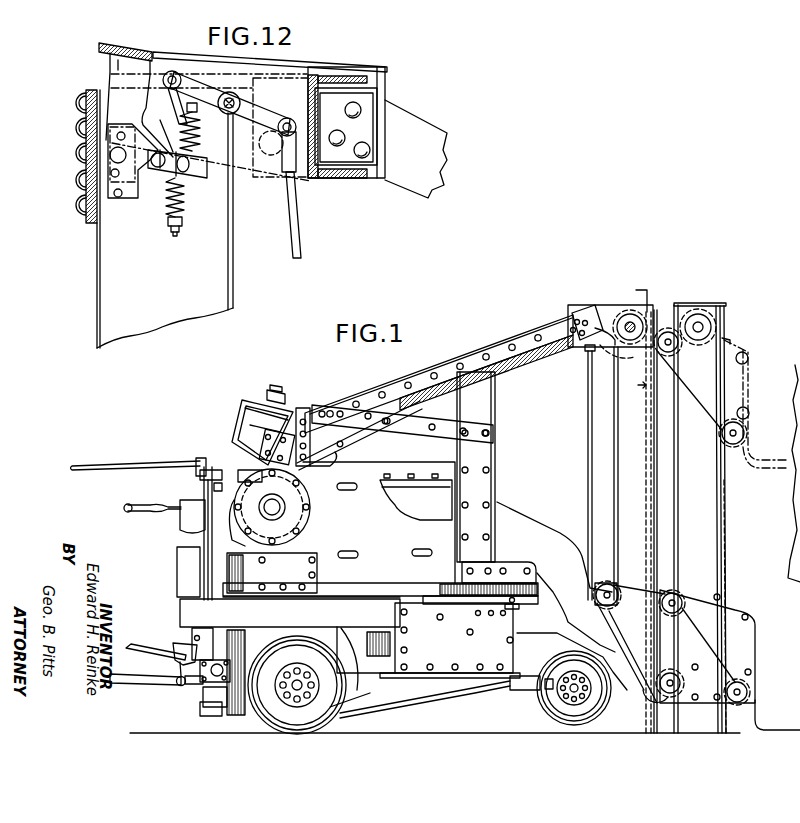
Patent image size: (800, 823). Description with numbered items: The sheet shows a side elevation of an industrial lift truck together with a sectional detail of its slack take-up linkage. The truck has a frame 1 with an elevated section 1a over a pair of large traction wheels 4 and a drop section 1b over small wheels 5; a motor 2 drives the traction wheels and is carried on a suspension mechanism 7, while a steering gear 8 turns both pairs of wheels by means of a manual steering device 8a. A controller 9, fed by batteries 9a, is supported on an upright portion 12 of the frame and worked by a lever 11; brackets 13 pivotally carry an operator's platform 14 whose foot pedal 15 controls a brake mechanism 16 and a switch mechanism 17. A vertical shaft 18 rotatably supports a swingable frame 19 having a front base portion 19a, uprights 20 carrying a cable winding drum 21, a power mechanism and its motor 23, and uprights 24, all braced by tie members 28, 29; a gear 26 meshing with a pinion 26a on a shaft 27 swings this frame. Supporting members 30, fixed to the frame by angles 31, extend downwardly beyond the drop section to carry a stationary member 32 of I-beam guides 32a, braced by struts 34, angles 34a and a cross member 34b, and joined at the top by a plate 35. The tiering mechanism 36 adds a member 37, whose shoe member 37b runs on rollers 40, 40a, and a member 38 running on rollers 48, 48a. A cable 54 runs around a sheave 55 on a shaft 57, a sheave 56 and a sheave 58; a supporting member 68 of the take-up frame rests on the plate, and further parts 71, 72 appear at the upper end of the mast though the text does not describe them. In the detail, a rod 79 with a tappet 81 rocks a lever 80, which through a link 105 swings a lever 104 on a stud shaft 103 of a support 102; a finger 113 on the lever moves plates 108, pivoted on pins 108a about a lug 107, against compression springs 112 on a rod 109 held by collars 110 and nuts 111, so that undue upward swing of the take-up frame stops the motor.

In FIG. 1, the frame 1 is at (290, 613).
In FIG. 1, the elevated section 1a is at (340, 610).
In FIG. 1, the drop section 1b is at (547, 630).
In FIG. 1, the motor 2 is at (245, 645).
In FIG. 1, the wheels 4 is at (262, 720).
In FIG. 1, the wheels 5 is at (540, 716).
In FIG. 1, the suspension mechanism 7 is at (208, 714).
In FIG. 1, the steering gear 8 is at (404, 698).
In FIG. 1, the manual steering device 8a is at (120, 465).
In FIG. 1, the controller 9 is at (185, 530).
In FIG. 1, the batteries 9a is at (412, 500).
In FIG. 1, the lever 11 is at (134, 512).
In FIG. 1, the upright portion 12 is at (208, 470).
In FIG. 1, the brackets 13 is at (217, 633).
In FIG. 1, the platform 14 is at (135, 683).
In FIG. 1, the foot pedal 15 is at (158, 652).
In FIG. 1, the brake mechanism 16 is at (350, 660).
In FIG. 1, the switch mechanism 17 is at (180, 578).
In FIG. 1, the vertical shaft 18 is at (478, 620).
In FIG. 1, the frame 19 is at (380, 578).
In FIG. 1, the front base portion 19a is at (540, 576).
In FIG. 1, the uprights 20 is at (312, 470).
In FIG. 1, the cable winding drum 21 is at (312, 506).
In FIG. 1, the motor 23 is at (243, 425).
In FIG. 1, the uprights 24 is at (487, 484).
In FIG. 1, the gear 26 is at (532, 588).
In FIG. 1, the pinion 26a is at (420, 600).
In FIG. 1, the shaft 27 is at (447, 618).
In FIG. 1, the tie member 28 is at (432, 440).
In FIG. 1, the tie member 29 is at (336, 455).
In FIG. 1, the supporting members 30 is at (545, 530).
In FIG. 1, the angles 31 is at (515, 562).
In FIG. 1, the member 32 is at (622, 482).
In FIG. 12, the guides 32a is at (104, 261).
In FIG. 12, the struts 34 is at (422, 130).
In FIG. 1, the struts 34 is at (535, 341).
In FIG. 12, the angles 34a is at (383, 84).
In FIG. 1, the angles 34a is at (606, 314).
In FIG. 12, the cross member 34b is at (335, 98).
In FIG. 12, the plate 35 is at (80, 149).
In FIG. 1, the plate 35 is at (656, 320).
In FIG. 1, the tiering mechanism 36 is at (692, 518).
In FIG. 1, the member 37 is at (709, 606).
In FIG. 1, the shoe member 37b is at (627, 653).
In FIG. 1, the member 38 is at (707, 646).
In FIG. 1, the roller 40 is at (609, 584).
In FIG. 1, the roller 40a is at (655, 700).
In FIG. 1, the roller 48 is at (674, 590).
In FIG. 1, the roller 48a is at (735, 704).
In FIG. 1, the cable 54 is at (502, 372).
In FIG. 1, the sheave 55 is at (622, 360).
In FIG. 1, the sheave 56 is at (672, 670).
In FIG. 1, the shaft 57 is at (622, 343).
In FIG. 1, the sheave 58 is at (694, 306).
In FIG. 12, the supporting member 68 is at (113, 49).
In FIG. 1, the pulley 71 is at (670, 312).
In FIG. 1, the bracket 72 is at (732, 338).
In FIG. 12, the rod 79 is at (298, 243).
In FIG. 1, the rod 79 is at (589, 455).
In FIG. 12, the lever 80 is at (262, 110).
In FIG. 1, the adjustable tappet 81 is at (586, 352).
In FIG. 12, the support 102 is at (118, 82).
In FIG. 12, the stud shaft 103 is at (110, 158).
In FIG. 12, the lever 104 is at (178, 112).
In FIG. 12, the link 105 is at (163, 86).
In FIG. 12, the lug 107 is at (116, 198).
In FIG. 12, the plates 108 is at (205, 158).
In FIG. 12, the pins 108a is at (118, 134).
In FIG. 12, the rod 109 is at (172, 232).
In FIG. 12, the collars 110 is at (183, 221).
In FIG. 12, the nuts 111 is at (176, 236).
In FIG. 12, the compression springs 112 is at (200, 140).
In FIG. 12, the finger 113 is at (240, 178).